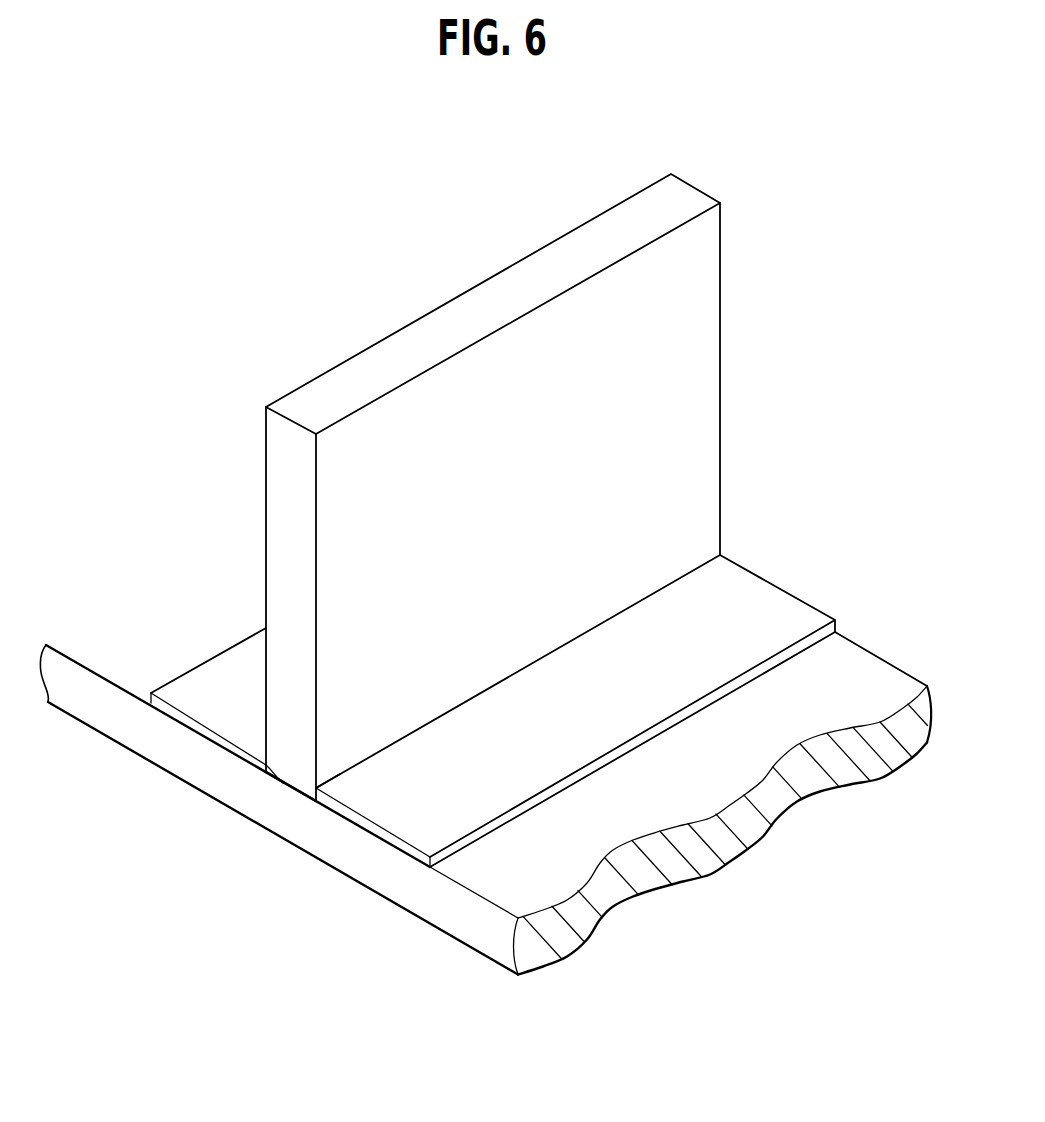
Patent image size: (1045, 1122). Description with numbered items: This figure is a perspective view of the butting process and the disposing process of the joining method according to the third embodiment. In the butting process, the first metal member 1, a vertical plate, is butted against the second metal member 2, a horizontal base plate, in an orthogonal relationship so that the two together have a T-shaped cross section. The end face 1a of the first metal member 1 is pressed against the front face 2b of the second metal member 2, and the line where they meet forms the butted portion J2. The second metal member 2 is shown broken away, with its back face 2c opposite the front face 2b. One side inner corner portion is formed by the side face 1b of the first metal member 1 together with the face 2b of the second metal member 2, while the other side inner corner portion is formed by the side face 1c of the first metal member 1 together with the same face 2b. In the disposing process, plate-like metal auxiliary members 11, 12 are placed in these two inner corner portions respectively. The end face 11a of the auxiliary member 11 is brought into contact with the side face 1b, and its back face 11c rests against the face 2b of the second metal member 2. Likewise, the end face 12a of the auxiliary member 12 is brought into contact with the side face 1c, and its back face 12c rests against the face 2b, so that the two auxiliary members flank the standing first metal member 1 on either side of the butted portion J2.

The first metal member 1 is at (461, 531).
The end face 1a is at (280, 788).
The side face 1b is at (565, 367).
The side face 1c is at (265, 445).
The second metal member 2 is at (485, 827).
The front face 2b is at (553, 865).
The back face 2c is at (440, 930).
The auxiliary member 11 is at (541, 744).
The end face 11a is at (288, 790).
The back face 11c is at (370, 835).
The auxiliary member 12 is at (185, 690).
The end face 12a is at (278, 786).
The back face 12c is at (181, 730).
The butted portion J2 is at (276, 786).